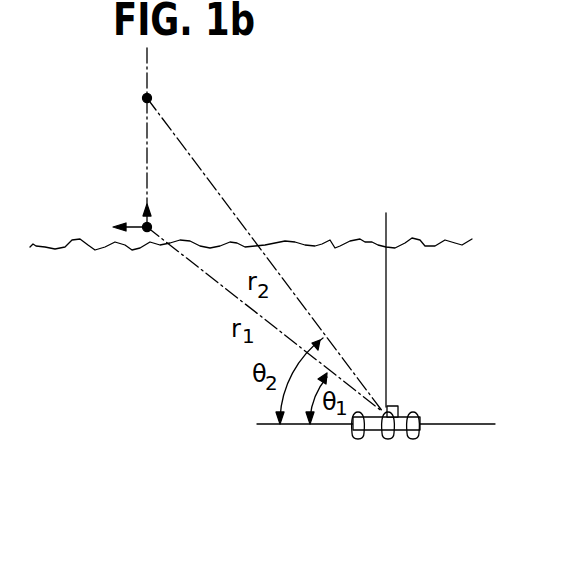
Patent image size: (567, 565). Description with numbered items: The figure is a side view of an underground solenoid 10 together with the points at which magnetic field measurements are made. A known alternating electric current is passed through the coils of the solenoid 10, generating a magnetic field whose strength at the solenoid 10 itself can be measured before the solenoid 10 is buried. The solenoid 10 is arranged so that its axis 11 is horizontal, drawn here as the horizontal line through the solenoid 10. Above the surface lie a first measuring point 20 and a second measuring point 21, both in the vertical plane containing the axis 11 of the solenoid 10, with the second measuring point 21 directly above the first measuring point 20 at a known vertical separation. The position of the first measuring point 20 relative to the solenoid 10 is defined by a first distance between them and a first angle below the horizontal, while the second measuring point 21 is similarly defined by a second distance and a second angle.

The solenoid 10 is at (405, 433).
The axis 11 is at (449, 424).
The first measuring point 20 is at (145, 223).
The second measuring point 21 is at (143, 98).